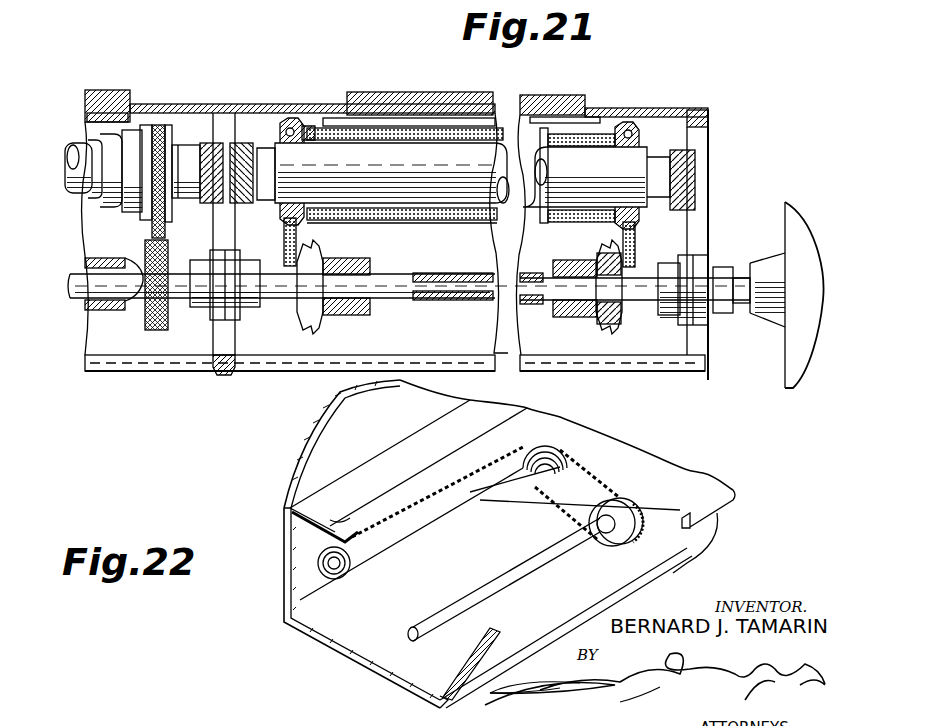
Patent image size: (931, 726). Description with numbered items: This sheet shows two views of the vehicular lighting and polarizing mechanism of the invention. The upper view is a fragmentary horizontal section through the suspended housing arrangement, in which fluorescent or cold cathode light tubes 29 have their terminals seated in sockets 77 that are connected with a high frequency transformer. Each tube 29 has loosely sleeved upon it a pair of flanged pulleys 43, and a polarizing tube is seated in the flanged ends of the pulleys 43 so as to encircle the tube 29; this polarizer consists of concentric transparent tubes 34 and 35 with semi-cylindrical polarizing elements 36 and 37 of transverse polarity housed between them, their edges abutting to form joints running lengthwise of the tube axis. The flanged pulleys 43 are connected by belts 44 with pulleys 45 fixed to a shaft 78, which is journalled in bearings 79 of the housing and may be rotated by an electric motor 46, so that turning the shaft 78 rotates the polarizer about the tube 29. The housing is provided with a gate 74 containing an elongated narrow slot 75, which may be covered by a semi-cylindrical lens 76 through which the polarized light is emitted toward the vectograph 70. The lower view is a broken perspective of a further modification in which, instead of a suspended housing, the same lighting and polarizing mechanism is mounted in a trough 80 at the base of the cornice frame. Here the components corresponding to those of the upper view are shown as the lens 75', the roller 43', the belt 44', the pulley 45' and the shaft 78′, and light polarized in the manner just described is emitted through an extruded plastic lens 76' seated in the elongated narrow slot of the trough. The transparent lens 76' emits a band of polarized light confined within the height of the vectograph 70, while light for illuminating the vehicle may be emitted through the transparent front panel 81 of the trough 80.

In FIG. 21, the fluorescent tube 29 is at (642, 160).
In FIG. 21, the transparent tube 34 is at (500, 224).
In FIG. 21, the transparent tube 35 is at (405, 220).
In FIG. 21, the polarizing element 36 is at (455, 222).
In FIG. 21, the polarizing element 37 is at (434, 130).
In FIG. 21, the flanged pulley 43 is at (460, 146).
In FIG. 21, the belt 44 is at (442, 242).
In FIG. 21, the pulley 45 is at (443, 296).
In FIG. 21, the electric motor 46 is at (790, 350).
In FIG. 22, the vectograph 70 is at (316, 450).
In FIG. 21, the gate 74 is at (330, 120).
In FIG. 21, the elongated narrow slot 75 is at (572, 90).
In FIG. 21, the semi-cylindrical lens 76 is at (420, 86).
In FIG. 21, the socket 77 is at (82, 148).
In FIG. 21, the shaft 78 is at (401, 298).
In FIG. 21, the bearing 79 is at (160, 125).
In FIG. 22, the trough 80 is at (325, 642).
In FIG. 22, the transparent front panel 81 is at (695, 541).
In FIG. 22, the extruded plastic lens 76' is at (408, 466).
In FIG. 22, the tube 75' is at (297, 545).
In FIG. 22, the roller 43' is at (433, 523).
In FIG. 22, the chain 44' is at (516, 493).
In FIG. 22, the sprocket 45' is at (595, 512).
In FIG. 22, the shaft 78′ is at (462, 608).